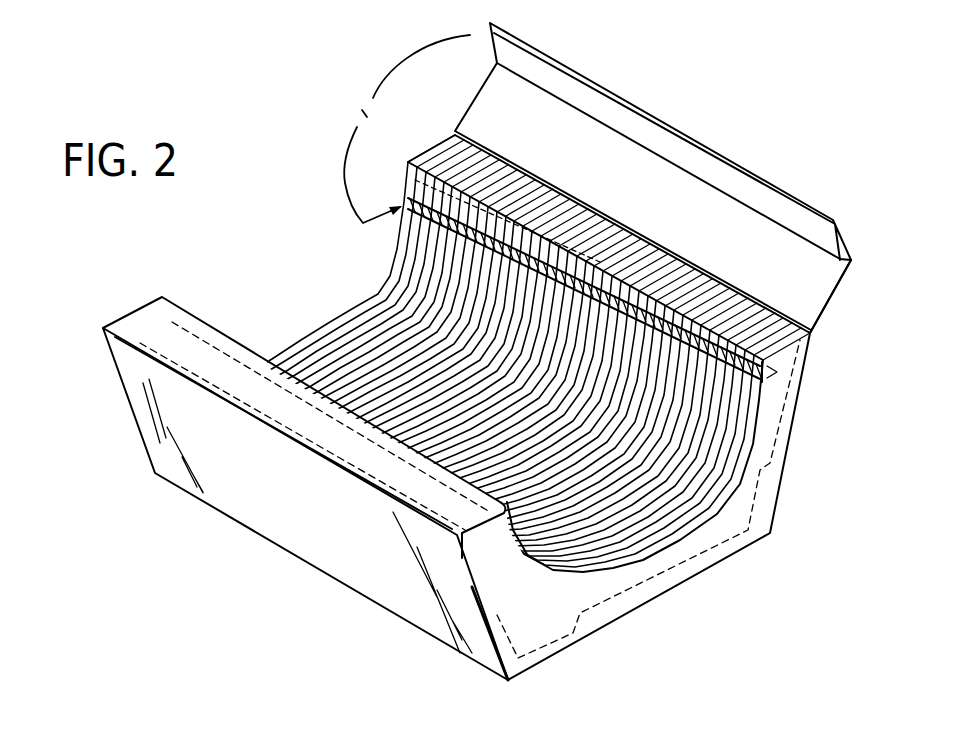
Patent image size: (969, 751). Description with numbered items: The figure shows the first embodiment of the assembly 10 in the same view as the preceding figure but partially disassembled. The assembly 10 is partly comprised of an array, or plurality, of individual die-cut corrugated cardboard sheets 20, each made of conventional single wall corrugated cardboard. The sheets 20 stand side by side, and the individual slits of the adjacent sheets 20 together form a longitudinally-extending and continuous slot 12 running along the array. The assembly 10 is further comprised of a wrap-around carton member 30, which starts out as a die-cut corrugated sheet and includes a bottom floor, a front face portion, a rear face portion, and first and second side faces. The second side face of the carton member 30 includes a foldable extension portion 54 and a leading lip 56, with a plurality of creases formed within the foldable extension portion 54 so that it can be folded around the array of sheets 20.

The assembly 10 is at (322, 230).
The slot 12 is at (730, 390).
The corrugated cardboard sheet 20 is at (333, 335).
The wrap-around carton member 30 is at (718, 530).
The foldable extension portion 54 is at (792, 283).
The leading lip 56 is at (640, 102).